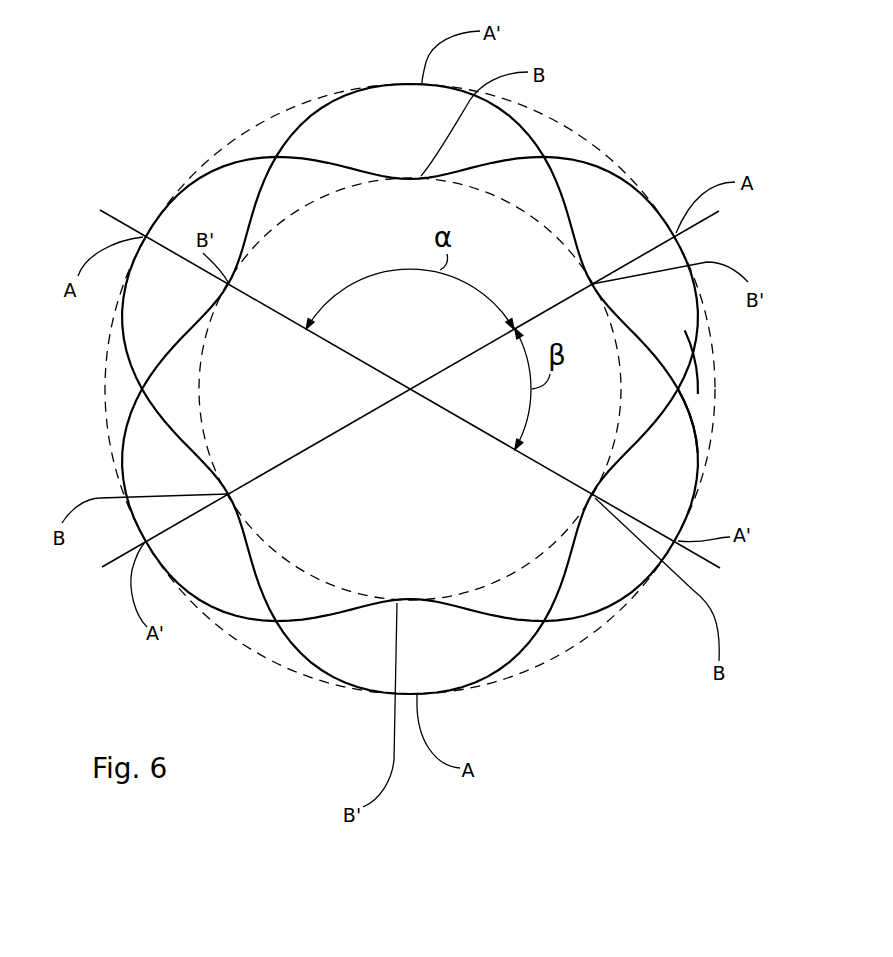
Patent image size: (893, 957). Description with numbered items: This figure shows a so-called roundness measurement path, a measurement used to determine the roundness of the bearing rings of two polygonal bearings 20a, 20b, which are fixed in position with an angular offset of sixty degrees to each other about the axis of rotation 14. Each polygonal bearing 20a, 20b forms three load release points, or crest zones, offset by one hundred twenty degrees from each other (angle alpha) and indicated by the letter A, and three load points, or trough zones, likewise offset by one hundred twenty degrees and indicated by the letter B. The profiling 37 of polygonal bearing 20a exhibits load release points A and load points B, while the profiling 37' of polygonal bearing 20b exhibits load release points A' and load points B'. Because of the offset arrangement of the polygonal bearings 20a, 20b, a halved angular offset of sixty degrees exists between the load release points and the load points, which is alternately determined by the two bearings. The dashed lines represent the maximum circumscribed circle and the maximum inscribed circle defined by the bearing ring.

The axis of rotation 14 is at (410, 392).
The polygonal bearing 20a is at (138, 220).
The polygonal bearing 20b is at (109, 476).
The profiling 37 is at (728, 362).
The profiling 37' is at (730, 421).